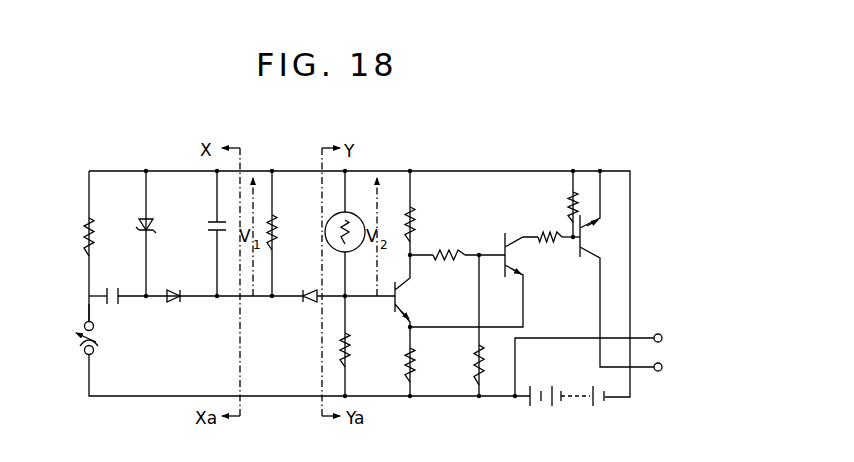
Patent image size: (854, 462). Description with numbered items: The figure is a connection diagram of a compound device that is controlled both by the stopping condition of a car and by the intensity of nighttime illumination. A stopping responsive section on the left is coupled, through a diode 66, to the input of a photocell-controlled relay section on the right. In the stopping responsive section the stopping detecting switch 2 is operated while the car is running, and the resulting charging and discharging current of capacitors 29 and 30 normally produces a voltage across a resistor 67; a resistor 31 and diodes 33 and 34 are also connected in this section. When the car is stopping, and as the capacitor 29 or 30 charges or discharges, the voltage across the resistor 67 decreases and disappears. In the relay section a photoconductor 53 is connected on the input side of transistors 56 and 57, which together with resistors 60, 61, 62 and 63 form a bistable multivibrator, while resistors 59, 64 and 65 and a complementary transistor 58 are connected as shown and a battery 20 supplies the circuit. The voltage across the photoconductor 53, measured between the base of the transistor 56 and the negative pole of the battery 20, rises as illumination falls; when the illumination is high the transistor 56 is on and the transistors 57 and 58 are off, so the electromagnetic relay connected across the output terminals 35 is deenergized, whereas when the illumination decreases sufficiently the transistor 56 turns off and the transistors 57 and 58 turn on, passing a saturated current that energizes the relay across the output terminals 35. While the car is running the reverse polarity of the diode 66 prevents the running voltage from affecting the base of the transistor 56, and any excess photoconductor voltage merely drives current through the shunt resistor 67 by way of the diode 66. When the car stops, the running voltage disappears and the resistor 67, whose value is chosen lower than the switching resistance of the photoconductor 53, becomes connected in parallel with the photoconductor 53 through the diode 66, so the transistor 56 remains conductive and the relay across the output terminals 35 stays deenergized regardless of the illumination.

The stopping detecting switch 2 is at (112, 358).
The battery 20 is at (577, 398).
The capacitor 29 is at (110, 300).
The capacitor 30 is at (208, 232).
The resistor 31 is at (92, 249).
The diode 33 is at (138, 219).
The diode 34 is at (175, 303).
The output terminals 35 is at (619, 369).
The photoconductor 53 is at (332, 218).
The transistor 56 is at (397, 296).
The transistor 57 is at (507, 256).
The complementary transistor 58 is at (582, 238).
The resistor 59 is at (350, 342).
The resistor 60 is at (415, 230).
The resistor 61 is at (452, 262).
The resistor 62 is at (474, 360).
The resistor 63 is at (405, 362).
The resistor 64 is at (545, 231).
The resistor 65 is at (568, 206).
The diode 66 is at (308, 304).
The resistor 67 is at (277, 238).